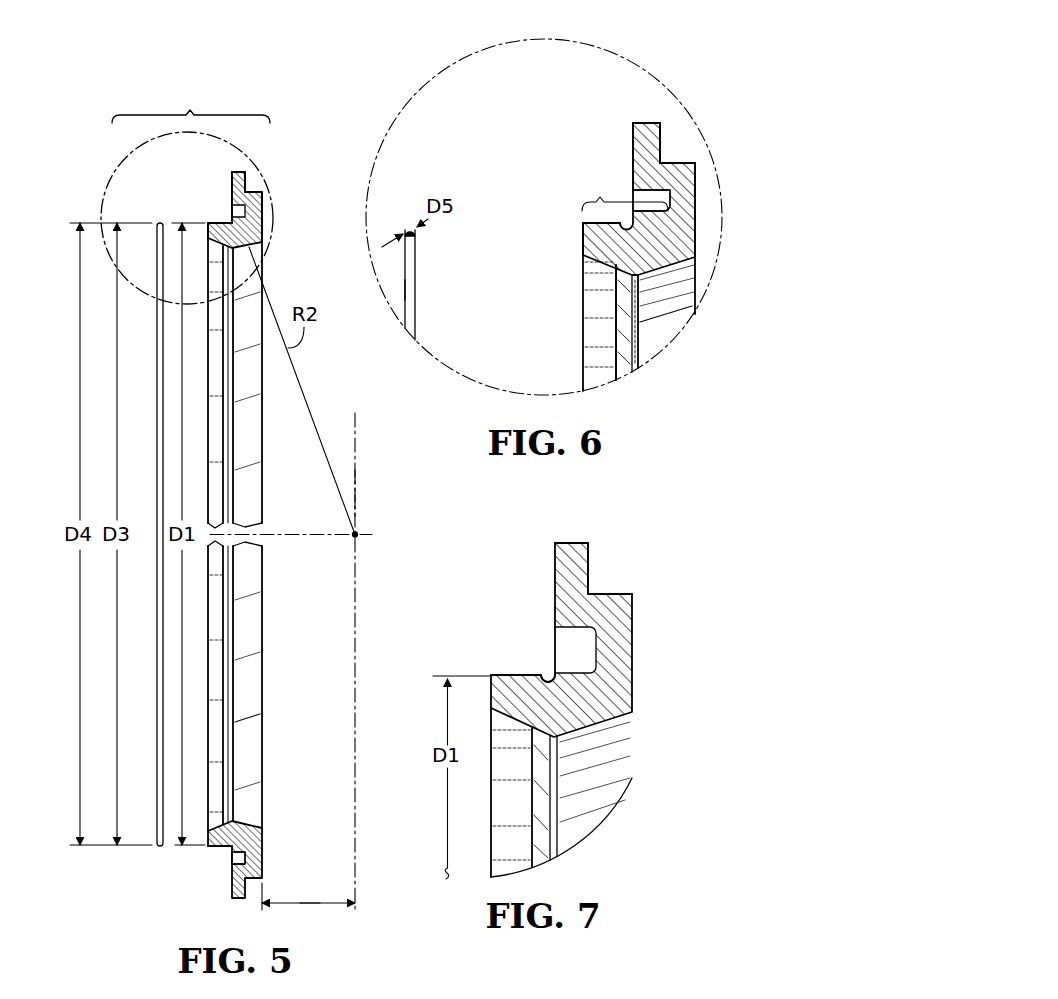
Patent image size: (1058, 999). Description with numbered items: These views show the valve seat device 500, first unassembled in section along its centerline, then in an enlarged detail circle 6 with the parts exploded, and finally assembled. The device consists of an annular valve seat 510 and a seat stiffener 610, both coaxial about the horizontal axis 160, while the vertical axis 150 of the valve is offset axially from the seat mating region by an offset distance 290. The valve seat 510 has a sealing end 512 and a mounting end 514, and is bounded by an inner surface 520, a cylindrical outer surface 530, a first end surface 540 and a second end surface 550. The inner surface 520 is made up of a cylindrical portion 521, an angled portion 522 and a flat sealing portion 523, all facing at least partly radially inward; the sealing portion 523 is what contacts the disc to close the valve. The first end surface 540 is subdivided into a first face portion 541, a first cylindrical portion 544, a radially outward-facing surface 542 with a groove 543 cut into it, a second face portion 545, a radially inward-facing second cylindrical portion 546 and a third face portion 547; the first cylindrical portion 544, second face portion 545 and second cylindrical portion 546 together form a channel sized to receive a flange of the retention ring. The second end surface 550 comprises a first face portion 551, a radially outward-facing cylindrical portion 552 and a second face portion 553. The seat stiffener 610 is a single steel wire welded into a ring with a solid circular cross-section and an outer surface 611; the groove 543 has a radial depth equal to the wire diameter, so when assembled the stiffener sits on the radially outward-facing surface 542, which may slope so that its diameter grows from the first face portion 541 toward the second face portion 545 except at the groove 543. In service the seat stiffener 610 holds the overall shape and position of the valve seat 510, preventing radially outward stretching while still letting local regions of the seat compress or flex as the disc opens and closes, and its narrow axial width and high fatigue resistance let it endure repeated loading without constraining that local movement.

In FIG. 5, the valve seat device 500 is at (191, 106).
In FIG. 7, the valve seat device 500 is at (609, 559).
In FIG. 5, the detail view circle 6 is at (123, 160).
In FIG. 5, the valve seat 510 is at (255, 398).
In FIG. 6, the valve seat 510 is at (668, 327).
In FIG. 7, the valve seat 510 is at (600, 778).
In FIG. 6, the sealing end 512 is at (627, 345).
In FIG. 6, the mounting end 514 is at (633, 188).
In FIG. 5, the inner surface 520 is at (250, 480).
In FIG. 6, the inner surface 520 is at (667, 290).
In FIG. 6, the cylindrical portion 521 is at (597, 298).
In FIG. 6, the angled portion 522 is at (623, 312).
In FIG. 5, the sealing portion 523 is at (258, 711).
In FIG. 6, the sealing portion 523 is at (656, 342).
In FIG. 5, the outer surface 530 is at (238, 170).
In FIG. 6, the outer surface 530 is at (645, 119).
In FIG. 5, the first end surface 540 is at (206, 233).
In FIG. 6, the first end surface 540 is at (579, 242).
In FIG. 6, the first face portion 541 is at (593, 247).
In FIG. 5, the radially outward-facing surface 542 is at (242, 853).
In FIG. 6, the radially outward-facing surface 542 is at (579, 237).
In FIG. 7, the radially outward-facing surface 542 is at (519, 670).
In FIG. 6, the groove 543 is at (590, 222).
In FIG. 6, the first cylindrical portion 544 is at (622, 192).
In FIG. 6, the second face portion 545 is at (696, 188).
In FIG. 6, the second cylindrical portion 546 is at (633, 176).
In FIG. 6, the third face portion 547 is at (636, 145).
In FIG. 5, the second end surface 550 is at (265, 218).
In FIG. 6, the second end surface 550 is at (698, 170).
In FIG. 6, the first face portion 551 is at (696, 182).
In FIG. 6, the cylindrical portion 552 is at (679, 172).
In FIG. 6, the second face portion 553 is at (661, 147).
In FIG. 5, the seat stiffener 610 is at (157, 362).
In FIG. 6, the seat stiffener 610 is at (401, 267).
In FIG. 7, the seat stiffener 610 is at (546, 673).
In FIG. 6, the outer surface 611 is at (405, 292).
In FIG. 5, the vertical axis 150 is at (358, 490).
In FIG. 5, the horizontal axis 160 is at (281, 535).
In FIG. 5, the offset distance 290 is at (305, 901).